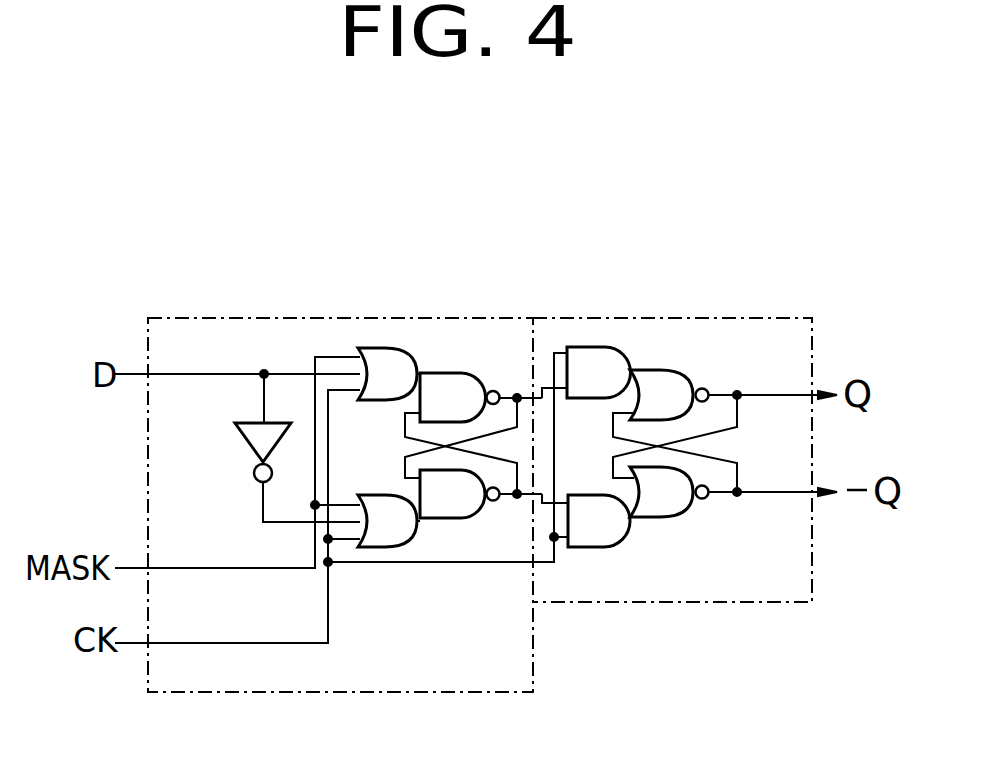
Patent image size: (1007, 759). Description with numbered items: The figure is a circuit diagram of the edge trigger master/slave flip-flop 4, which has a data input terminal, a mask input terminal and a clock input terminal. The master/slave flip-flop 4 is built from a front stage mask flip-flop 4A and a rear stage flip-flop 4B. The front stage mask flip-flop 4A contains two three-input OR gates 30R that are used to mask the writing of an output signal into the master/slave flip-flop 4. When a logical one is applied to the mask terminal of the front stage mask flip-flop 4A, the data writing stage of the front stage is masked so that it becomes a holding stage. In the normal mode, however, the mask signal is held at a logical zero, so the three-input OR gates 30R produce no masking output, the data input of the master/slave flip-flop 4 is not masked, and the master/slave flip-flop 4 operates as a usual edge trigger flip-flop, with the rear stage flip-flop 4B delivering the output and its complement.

The front stage mask flip-flop 4A is at (333, 323).
The 3-input OR gate 30R is at (377, 348).
The master/slave flip-flop 4 is at (602, 301).
The rear stage flip-flop 4B is at (663, 597).